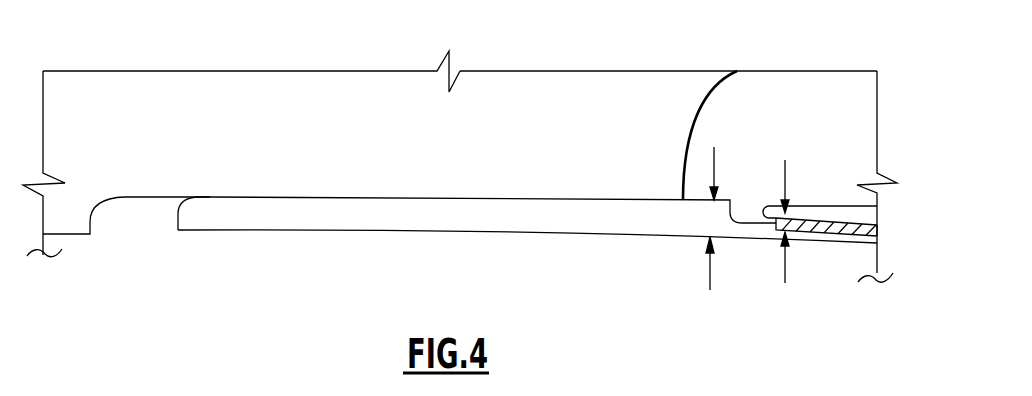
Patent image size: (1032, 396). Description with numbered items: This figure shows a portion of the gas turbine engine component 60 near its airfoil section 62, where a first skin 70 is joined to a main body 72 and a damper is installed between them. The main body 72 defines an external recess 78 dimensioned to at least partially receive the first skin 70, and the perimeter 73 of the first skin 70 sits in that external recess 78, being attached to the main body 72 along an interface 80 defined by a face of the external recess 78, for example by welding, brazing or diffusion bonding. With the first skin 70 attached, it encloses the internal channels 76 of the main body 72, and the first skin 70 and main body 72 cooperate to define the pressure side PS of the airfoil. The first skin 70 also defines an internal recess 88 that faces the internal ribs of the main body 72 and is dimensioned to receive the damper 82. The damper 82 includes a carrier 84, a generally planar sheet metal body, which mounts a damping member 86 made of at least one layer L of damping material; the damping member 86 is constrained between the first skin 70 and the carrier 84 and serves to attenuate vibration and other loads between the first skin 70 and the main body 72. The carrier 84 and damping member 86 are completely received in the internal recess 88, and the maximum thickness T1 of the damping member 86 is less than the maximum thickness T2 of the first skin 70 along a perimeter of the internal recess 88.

The component 60 is at (86, 71).
The airfoil section 62 is at (125, 88).
The main body 72 is at (531, 88).
The internal channels 76 is at (707, 95).
The perimeter 73 is at (229, 205).
The external recess 78 is at (258, 195).
The interface 80 is at (342, 197).
The first skin 70 is at (250, 218).
The maximum thickness of the first skin T2 is at (715, 156).
The maximum thickness of the damping member T1 is at (784, 184).
The carrier 84 is at (813, 208).
The damper 82 is at (833, 207).
The damping member 86 is at (853, 213).
The internal recess 88 is at (801, 233).
The layer of damping material L is at (880, 236).
The pressure side PS is at (736, 238).